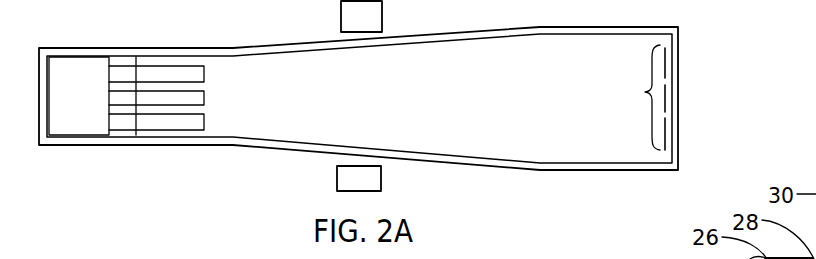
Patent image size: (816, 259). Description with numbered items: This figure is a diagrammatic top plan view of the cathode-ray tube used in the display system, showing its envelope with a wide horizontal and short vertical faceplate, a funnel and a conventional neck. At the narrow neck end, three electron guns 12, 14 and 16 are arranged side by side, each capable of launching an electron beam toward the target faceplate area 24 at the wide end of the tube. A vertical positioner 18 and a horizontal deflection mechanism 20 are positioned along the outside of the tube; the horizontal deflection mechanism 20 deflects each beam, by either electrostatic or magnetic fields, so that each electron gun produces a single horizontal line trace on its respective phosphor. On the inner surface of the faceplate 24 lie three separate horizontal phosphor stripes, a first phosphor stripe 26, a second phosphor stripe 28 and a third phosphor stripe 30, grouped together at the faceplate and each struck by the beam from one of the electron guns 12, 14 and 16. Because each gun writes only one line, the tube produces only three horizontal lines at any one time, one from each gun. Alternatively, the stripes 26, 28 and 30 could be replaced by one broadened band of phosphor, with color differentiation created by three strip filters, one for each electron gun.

The electron gun 12 is at (205, 97).
The electron gun 14 is at (205, 123).
The electron gun 16 is at (205, 72).
The vertical positioner 18 is at (382, 15).
The horizontal deflection mechanism 20 is at (381, 181).
The faceplate 24 is at (635, 97).
The first phosphor stripe 26 is at (665, 145).
The second phosphor stripe 28 is at (665, 106).
The third phosphor stripe 30 is at (665, 63).